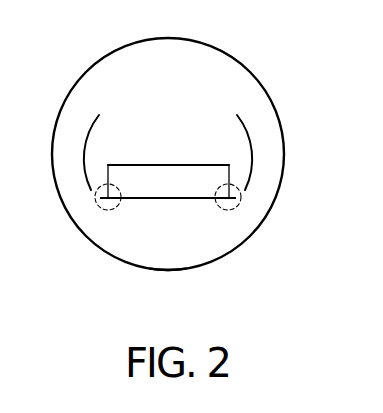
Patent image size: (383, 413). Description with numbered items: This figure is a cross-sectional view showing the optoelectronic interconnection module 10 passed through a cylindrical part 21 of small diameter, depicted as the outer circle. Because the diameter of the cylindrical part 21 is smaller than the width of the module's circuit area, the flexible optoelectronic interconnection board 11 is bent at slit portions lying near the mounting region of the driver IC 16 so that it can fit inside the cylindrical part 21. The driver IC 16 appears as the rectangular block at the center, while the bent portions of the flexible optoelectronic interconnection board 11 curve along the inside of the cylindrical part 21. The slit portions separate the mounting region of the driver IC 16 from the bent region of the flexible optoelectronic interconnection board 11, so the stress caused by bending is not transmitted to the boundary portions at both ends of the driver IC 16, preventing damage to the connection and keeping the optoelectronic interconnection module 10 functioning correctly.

The optoelectronic interconnection module 10 is at (168, 104).
The flexible optoelectronic interconnection board 11 is at (250, 152).
The driver IC 16 is at (153, 172).
The cylindrical part 21 is at (166, 270).